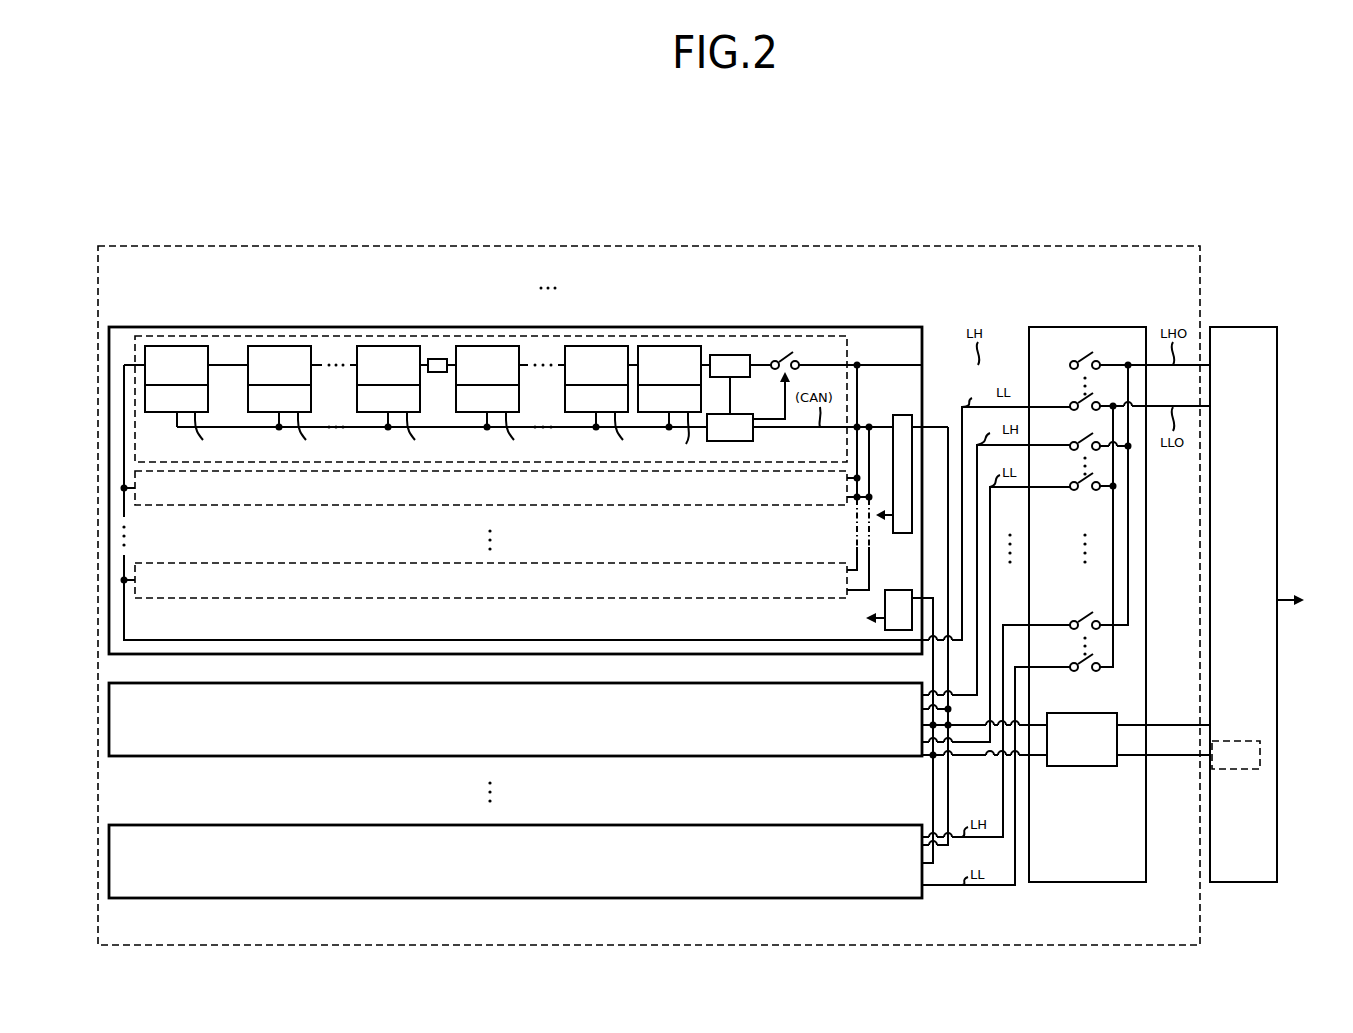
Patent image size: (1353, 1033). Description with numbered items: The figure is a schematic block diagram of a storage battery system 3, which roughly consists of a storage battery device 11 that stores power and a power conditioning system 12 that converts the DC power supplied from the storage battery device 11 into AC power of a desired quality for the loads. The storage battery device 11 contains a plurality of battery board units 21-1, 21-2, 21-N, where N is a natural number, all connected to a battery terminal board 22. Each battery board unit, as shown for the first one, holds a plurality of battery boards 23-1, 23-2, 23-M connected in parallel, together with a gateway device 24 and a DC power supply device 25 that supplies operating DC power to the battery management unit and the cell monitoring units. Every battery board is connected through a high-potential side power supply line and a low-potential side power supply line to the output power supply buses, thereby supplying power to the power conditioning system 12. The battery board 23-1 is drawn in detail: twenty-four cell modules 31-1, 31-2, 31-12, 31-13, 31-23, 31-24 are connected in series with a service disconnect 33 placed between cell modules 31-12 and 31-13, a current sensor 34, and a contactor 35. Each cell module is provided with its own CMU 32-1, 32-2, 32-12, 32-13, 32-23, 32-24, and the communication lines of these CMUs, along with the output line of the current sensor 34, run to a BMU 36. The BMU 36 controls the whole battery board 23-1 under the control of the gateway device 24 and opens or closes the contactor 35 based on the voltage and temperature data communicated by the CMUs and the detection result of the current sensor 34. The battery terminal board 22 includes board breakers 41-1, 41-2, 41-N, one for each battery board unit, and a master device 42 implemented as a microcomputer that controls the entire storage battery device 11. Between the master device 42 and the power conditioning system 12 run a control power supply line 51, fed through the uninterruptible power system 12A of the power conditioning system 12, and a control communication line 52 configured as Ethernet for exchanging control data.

The storage battery system 3 is at (862, 203).
The storage battery device 11 is at (214, 246).
The power conditioning system 12 is at (1242, 327).
The uninterruptible power system 12A is at (1220, 741).
The battery board unit 21-1 is at (848, 327).
The battery board unit 21-2 is at (838, 683).
The battery board unit 21-N is at (838, 825).
The battery terminal board 22 is at (1118, 327).
The battery board 23-1 is at (150, 336).
The battery board 23-2 is at (170, 506).
The battery board 23-M is at (180, 563).
The gateway device 24 is at (900, 415).
The DC power supply device 25 is at (889, 590).
The cell module 31-1 is at (186, 346).
The cell module 31-2 is at (274, 346).
The cell module 31-12 is at (380, 346).
The cell module 31-13 is at (485, 346).
The cell module 31-23 is at (588, 346).
The cell module 31-24 is at (662, 346).
The CMU 32-1 is at (204, 434).
The CMU 32-2 is at (305, 434).
The CMU 32-12 is at (418, 434).
The CMU 32-13 is at (519, 434).
The CMU 32-23 is at (626, 434).
The CMU 32-24 is at (696, 436).
The service disconnect 33 is at (437, 359).
The current sensor 34 is at (730, 355).
The contactor 35 is at (789, 353).
The BMU 36 is at (743, 414).
The board breaker 41-1 is at (1083, 352).
The board breaker 41-2 is at (1083, 440).
The board breaker 41-N is at (1085, 613).
The master device 42 is at (1085, 713).
The control power supply line 51 is at (1173, 755).
The control communication line 52 is at (1173, 725).